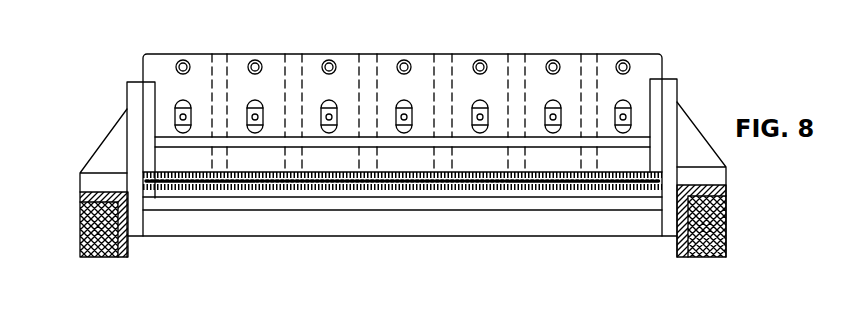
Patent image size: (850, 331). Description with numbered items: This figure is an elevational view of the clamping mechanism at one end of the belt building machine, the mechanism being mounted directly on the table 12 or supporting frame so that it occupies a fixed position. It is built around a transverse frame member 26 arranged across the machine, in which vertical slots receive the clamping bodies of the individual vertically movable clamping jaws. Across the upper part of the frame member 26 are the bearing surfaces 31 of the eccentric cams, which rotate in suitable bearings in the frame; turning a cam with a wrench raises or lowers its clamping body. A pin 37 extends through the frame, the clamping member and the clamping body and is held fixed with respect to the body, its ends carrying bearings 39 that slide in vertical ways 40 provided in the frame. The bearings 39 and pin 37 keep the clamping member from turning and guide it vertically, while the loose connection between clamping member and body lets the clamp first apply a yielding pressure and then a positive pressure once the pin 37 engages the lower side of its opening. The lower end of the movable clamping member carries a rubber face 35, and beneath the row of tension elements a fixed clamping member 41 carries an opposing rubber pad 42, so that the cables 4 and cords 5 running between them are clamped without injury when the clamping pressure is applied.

The cables 4 is at (196, 189).
The cords 5 is at (253, 189).
The table 12 is at (726, 202).
The transverse frame member 26 is at (197, 54).
The bearing surfaces 31 is at (178, 62).
The rubber face 35 is at (535, 172).
The pin 37 is at (332, 115).
The bearings 39 is at (176, 112).
The vertical ways 40 is at (177, 103).
The fixed clamping member 41 is at (385, 228).
The rubber pad 42 is at (443, 184).